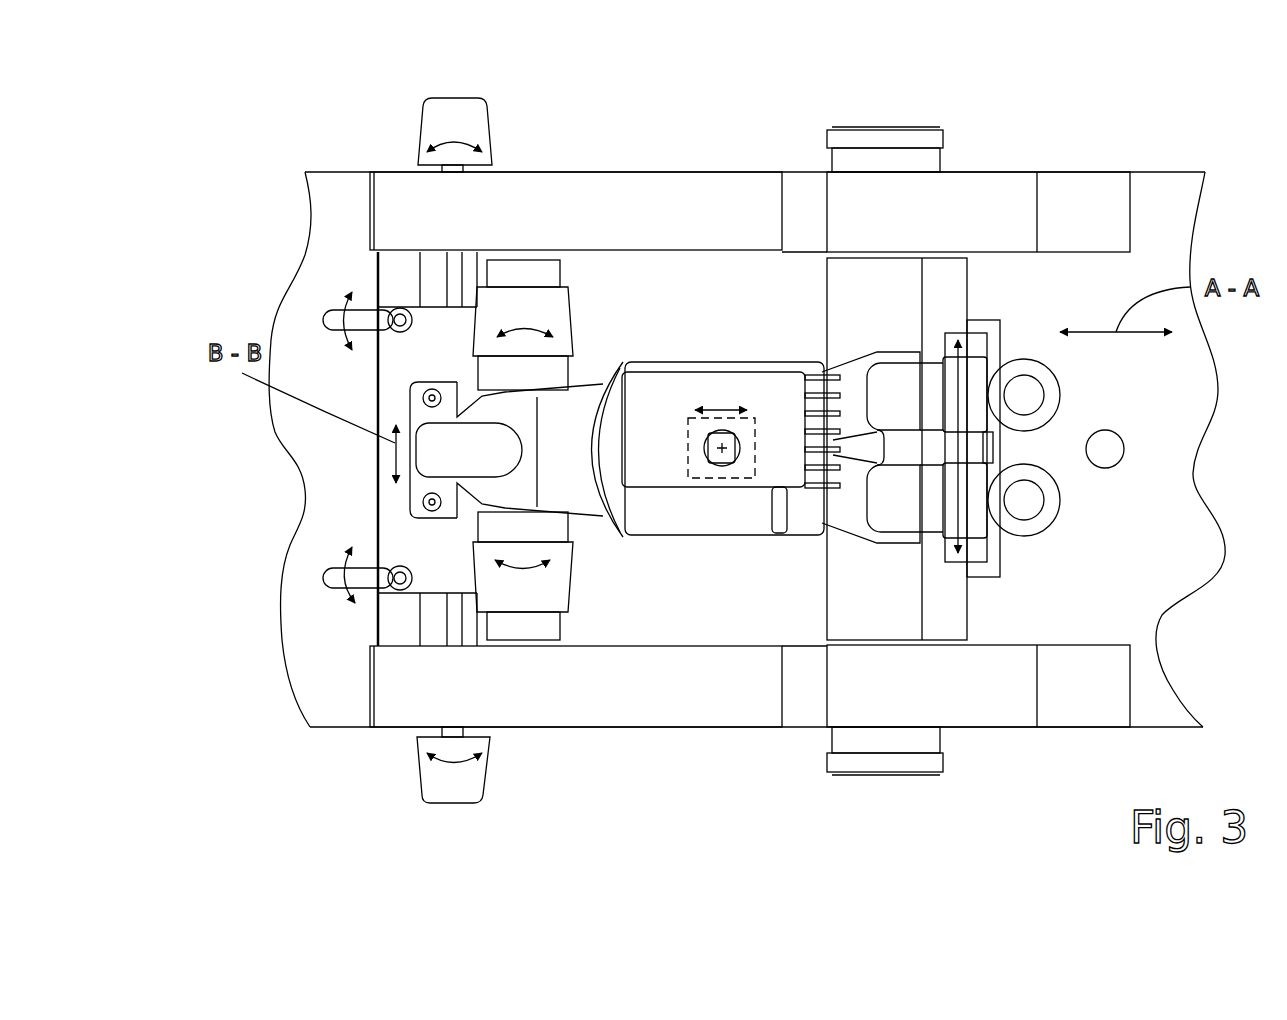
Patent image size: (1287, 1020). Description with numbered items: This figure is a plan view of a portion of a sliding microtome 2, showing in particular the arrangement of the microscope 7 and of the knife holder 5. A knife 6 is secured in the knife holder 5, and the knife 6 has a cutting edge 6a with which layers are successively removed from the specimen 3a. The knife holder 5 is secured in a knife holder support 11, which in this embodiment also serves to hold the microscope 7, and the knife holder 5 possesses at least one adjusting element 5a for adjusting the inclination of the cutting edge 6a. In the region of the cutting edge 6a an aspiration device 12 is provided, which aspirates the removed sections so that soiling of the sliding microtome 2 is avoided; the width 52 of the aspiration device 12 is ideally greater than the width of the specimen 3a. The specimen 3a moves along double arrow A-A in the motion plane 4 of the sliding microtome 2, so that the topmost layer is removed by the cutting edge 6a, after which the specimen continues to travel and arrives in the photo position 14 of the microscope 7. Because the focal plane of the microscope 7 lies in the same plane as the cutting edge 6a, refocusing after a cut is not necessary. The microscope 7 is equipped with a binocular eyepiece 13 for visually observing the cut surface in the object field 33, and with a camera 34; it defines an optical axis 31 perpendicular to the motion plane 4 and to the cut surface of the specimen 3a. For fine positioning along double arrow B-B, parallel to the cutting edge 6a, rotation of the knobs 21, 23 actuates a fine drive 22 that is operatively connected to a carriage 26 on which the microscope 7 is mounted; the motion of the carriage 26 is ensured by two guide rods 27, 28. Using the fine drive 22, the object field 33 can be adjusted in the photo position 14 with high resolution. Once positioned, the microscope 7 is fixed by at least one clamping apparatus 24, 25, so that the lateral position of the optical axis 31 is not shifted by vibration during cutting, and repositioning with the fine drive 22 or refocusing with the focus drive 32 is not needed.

The sliding microtome 2 is at (1155, 148).
The motion plane 4 is at (1157, 565).
The knife holder 5 is at (890, 292).
The adjusting element 5a is at (927, 138).
The knife 6 is at (997, 330).
The cutting edge 6a is at (1010, 547).
The microscope 7 is at (625, 365).
The knife holder support 11 is at (802, 180).
The aspiration device 12 is at (975, 345).
The binocular eyepiece 13 is at (843, 517).
The photo position 14 is at (708, 450).
The knob 21 is at (440, 790).
The fine drive 22 is at (453, 632).
The knob 23 is at (477, 113).
The clamping apparatus 24 is at (323, 578).
The clamping apparatus 25 is at (323, 320).
The carriage 26 is at (547, 188).
The guide rod 27 is at (388, 628).
The guide rod 28 is at (490, 643).
The optical axis 31 is at (722, 457).
The focus drive 32 is at (533, 313).
The object field 33 is at (740, 438).
The camera 34 is at (775, 488).
The width 52 is at (993, 447).
The specimen 3a is at (693, 435).